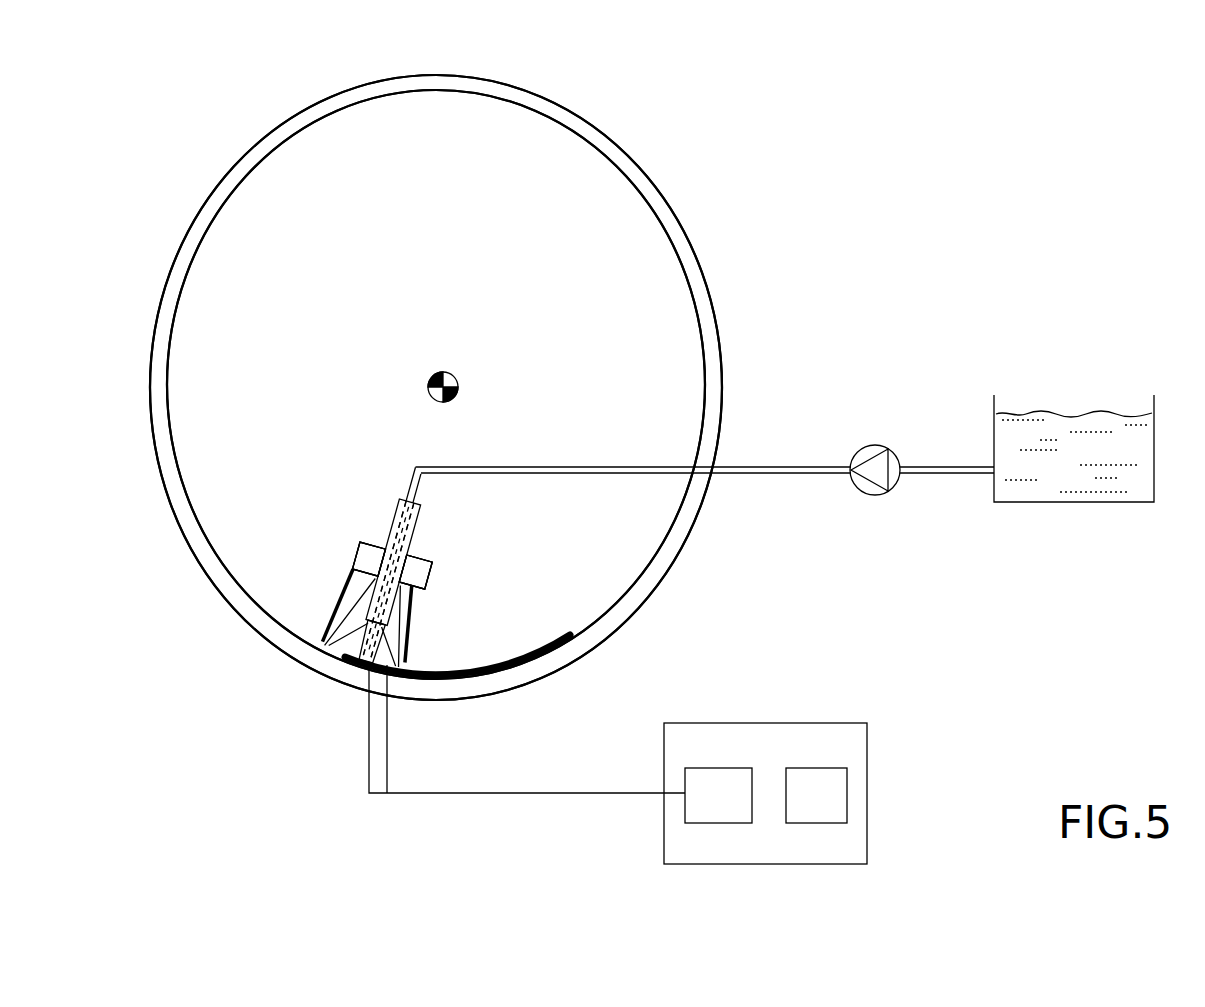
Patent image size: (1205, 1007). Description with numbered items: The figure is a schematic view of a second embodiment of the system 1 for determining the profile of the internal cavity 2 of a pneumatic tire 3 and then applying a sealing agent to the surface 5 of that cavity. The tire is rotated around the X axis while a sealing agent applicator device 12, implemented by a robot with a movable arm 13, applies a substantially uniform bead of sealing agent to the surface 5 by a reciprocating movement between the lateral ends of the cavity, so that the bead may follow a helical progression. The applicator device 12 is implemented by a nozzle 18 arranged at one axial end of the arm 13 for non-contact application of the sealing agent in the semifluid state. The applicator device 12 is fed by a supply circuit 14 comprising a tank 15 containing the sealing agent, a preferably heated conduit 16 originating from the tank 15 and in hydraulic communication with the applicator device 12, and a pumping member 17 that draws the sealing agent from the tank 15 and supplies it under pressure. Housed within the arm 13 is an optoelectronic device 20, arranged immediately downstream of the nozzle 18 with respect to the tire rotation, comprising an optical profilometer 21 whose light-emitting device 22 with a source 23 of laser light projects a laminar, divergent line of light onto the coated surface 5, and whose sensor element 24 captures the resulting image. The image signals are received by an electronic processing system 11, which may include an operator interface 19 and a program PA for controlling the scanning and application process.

The system 1 is at (656, 137).
The internal cavity 2 is at (503, 153).
The pneumatic tire 3 is at (672, 214).
The surface 5 is at (673, 258).
The X axis X is at (432, 374).
The sealing agent applicator device 12 is at (427, 545).
The arm 13 is at (423, 512).
The sensor element 24 is at (418, 536).
The optoelectronic device 20 is at (453, 553).
The optical profilometer 21 is at (441, 573).
The light-emitting device 22 is at (430, 583).
The source of laser light 23 is at (415, 572).
The nozzle 18 is at (340, 650).
The circuit 14 is at (785, 439).
The tank 15 is at (1025, 503).
The conduit 16 is at (772, 477).
The pumping member 17 is at (860, 494).
The electronic processing system 11 is at (670, 763).
The operator interface 19 is at (816, 795).
The program PA is at (718, 795).